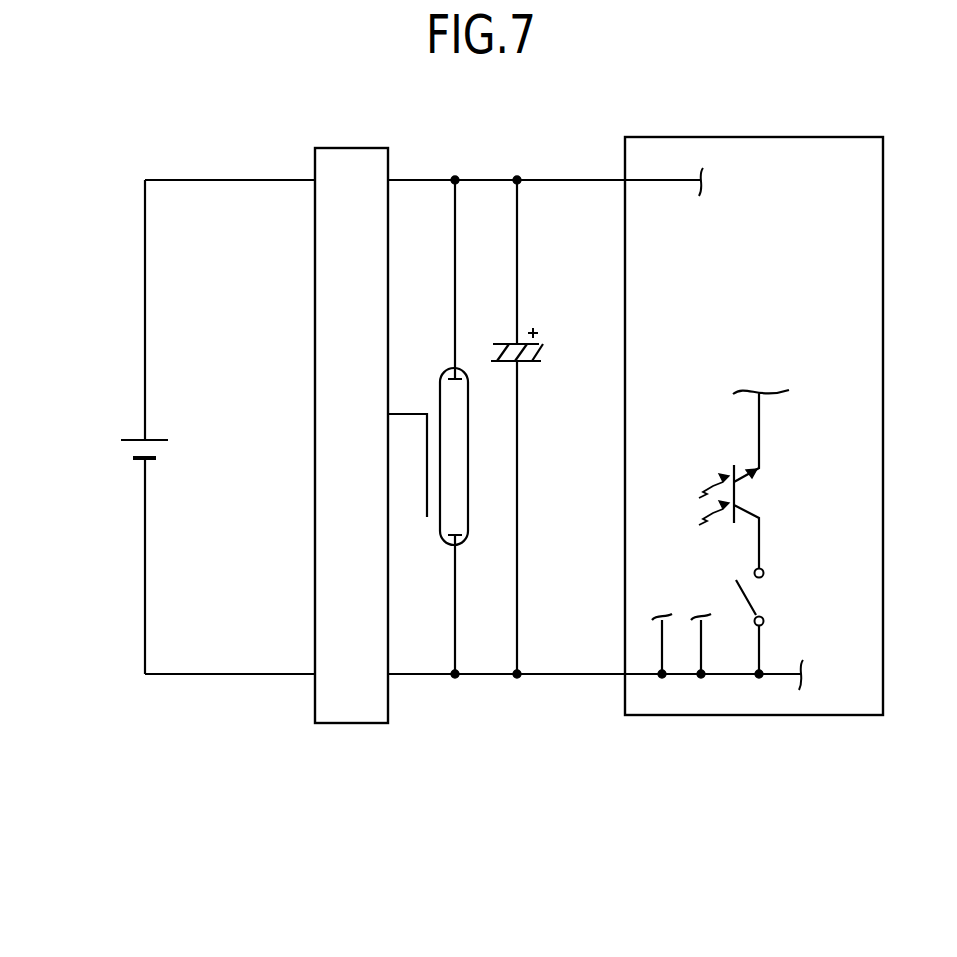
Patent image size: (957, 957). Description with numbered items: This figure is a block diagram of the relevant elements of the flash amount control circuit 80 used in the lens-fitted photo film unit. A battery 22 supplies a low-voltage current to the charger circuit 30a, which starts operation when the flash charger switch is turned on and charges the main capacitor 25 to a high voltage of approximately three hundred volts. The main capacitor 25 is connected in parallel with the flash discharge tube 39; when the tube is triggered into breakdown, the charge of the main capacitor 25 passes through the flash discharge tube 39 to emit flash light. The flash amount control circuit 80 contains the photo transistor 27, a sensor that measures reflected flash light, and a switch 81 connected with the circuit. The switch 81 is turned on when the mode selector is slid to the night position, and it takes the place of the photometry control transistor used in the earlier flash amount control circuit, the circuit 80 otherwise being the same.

The battery 22 is at (129, 438).
The charger circuit 30a is at (342, 148).
The flash discharge tube 39 is at (440, 390).
The main capacitor 25 is at (506, 343).
The flash amount control circuit 80 is at (665, 715).
The photo transistor 27 is at (750, 505).
The switch 81 is at (748, 598).